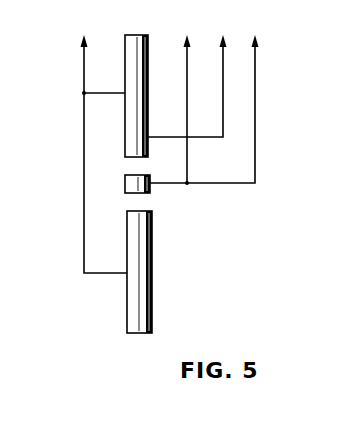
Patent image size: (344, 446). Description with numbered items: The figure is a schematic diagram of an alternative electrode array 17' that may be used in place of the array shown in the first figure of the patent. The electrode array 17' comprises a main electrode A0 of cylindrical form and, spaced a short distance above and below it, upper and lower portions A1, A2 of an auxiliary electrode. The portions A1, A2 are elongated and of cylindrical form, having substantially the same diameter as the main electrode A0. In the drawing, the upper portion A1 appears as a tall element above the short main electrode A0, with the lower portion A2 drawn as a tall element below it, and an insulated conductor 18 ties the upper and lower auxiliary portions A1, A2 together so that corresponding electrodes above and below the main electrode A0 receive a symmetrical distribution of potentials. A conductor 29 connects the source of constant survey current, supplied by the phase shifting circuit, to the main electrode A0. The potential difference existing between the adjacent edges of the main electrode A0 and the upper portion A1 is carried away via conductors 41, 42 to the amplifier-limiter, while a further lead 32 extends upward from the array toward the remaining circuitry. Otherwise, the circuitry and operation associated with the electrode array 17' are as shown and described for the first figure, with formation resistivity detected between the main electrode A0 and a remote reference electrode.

The output line 32 is at (82, 46).
The insulated conductor 18 is at (83, 208).
The upper portion of auxiliary electrode A1 is at (125, 78).
The main electrode A0 is at (125, 183).
The lower portion of auxiliary electrode A2 is at (152, 322).
The electrode array 17' is at (167, 272).
The conductor 41 is at (186, 103).
The conductor 42 is at (222, 103).
The conductor 29 is at (256, 103).